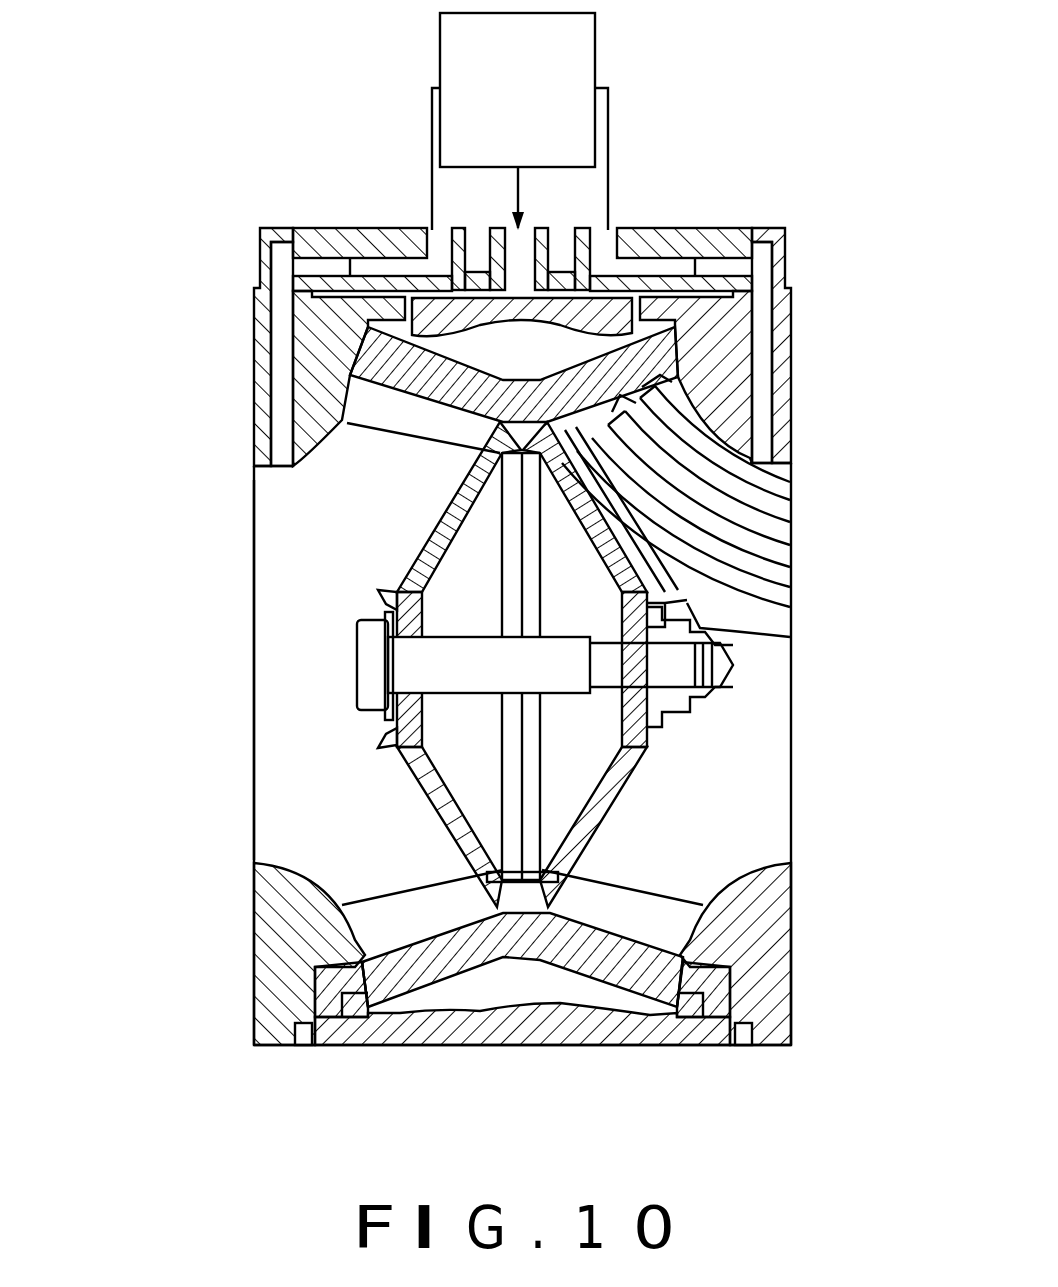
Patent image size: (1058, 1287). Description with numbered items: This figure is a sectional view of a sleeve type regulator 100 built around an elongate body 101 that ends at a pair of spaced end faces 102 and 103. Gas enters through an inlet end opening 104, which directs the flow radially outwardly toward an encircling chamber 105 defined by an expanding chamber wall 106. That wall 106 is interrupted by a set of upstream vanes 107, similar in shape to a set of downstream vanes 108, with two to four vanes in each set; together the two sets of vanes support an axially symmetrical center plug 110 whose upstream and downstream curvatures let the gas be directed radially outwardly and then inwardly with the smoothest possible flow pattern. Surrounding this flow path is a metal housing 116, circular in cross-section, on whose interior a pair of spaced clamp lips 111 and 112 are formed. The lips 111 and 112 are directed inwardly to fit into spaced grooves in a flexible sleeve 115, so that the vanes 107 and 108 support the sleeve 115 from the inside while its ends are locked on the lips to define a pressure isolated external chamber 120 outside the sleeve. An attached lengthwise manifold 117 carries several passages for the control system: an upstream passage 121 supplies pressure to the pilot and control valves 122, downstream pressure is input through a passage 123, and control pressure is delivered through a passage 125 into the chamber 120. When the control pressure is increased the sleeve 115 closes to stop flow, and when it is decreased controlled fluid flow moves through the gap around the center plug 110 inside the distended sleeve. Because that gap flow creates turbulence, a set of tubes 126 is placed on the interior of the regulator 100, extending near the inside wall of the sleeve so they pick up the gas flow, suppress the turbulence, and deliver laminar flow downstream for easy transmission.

The sleeve type regulator 100 is at (215, 570).
The elongate body 101 is at (255, 1045).
The end face 102 is at (255, 950).
The end face 103 is at (793, 985).
The inlet end opening 104 is at (258, 780).
The encircling chamber 105 is at (375, 500).
The expanding chamber wall 106 is at (328, 430).
The upstream vanes 107 is at (403, 920).
The downstream vanes 108 is at (633, 907).
The center plug 110 is at (375, 598).
The clamp lip 111 is at (355, 1007).
The clamp lip 112 is at (693, 1003).
The flexible sleeve 115 is at (481, 980).
The metal housing 116 is at (538, 1045).
The lengthwise manifold 117 is at (245, 252).
The external chamber 120 is at (545, 362).
The upstream passage 121 is at (373, 270).
The pilot and control valves 122 is at (597, 53).
The downstream pressure passage 123 is at (610, 190).
The control pressure passage 125 is at (517, 187).
The tubes 126 is at (808, 582).